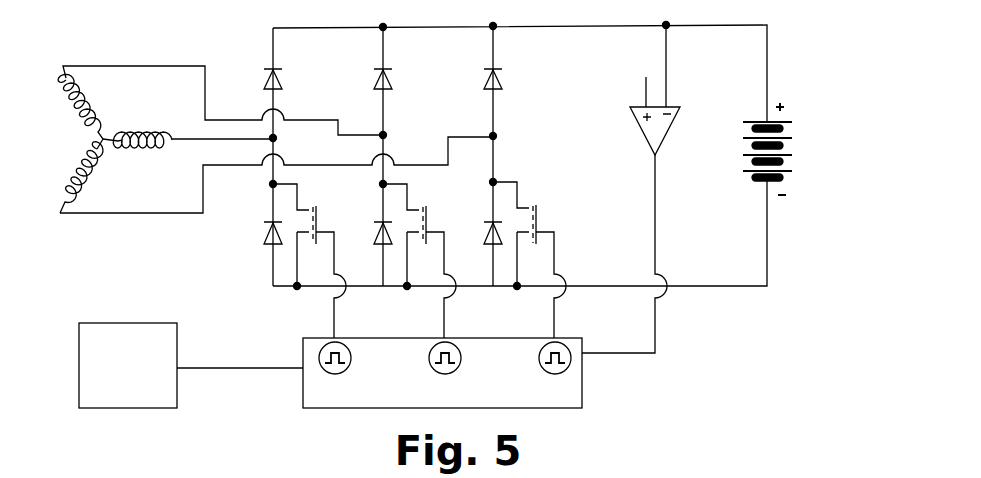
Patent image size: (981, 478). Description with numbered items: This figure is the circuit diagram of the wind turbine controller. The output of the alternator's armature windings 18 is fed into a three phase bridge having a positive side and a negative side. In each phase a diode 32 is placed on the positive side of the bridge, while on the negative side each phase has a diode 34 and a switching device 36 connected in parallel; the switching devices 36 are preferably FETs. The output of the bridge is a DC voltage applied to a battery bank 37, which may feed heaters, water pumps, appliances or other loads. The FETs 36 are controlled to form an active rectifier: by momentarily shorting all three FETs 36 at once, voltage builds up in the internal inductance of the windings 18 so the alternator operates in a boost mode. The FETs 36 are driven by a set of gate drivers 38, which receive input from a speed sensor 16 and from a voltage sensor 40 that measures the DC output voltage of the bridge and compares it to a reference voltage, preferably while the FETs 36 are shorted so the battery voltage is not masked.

The speed sensor 16 is at (137, 323).
The windings 18 is at (147, 150).
The diode 32 is at (503, 82).
The diode 34 is at (483, 232).
The switching device 36 is at (538, 212).
The battery bank 37 is at (792, 143).
The gate drivers 38 is at (585, 375).
The voltage sensor 40 is at (665, 133).